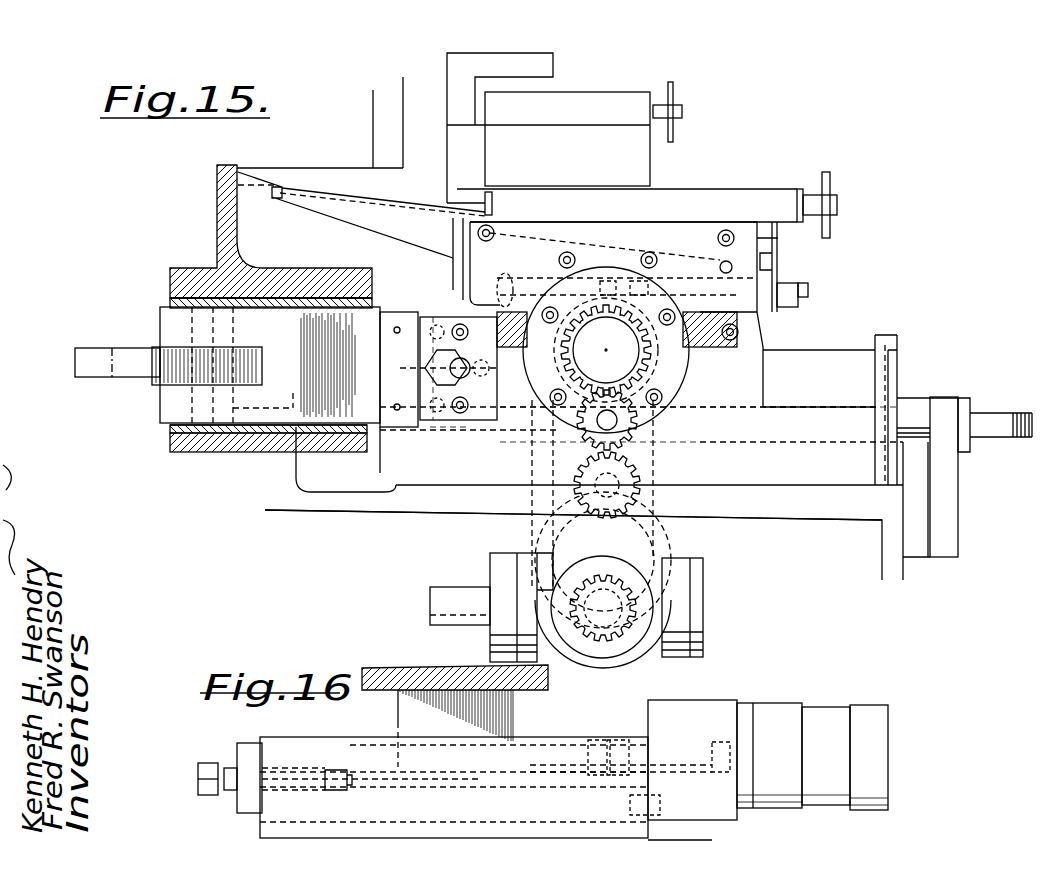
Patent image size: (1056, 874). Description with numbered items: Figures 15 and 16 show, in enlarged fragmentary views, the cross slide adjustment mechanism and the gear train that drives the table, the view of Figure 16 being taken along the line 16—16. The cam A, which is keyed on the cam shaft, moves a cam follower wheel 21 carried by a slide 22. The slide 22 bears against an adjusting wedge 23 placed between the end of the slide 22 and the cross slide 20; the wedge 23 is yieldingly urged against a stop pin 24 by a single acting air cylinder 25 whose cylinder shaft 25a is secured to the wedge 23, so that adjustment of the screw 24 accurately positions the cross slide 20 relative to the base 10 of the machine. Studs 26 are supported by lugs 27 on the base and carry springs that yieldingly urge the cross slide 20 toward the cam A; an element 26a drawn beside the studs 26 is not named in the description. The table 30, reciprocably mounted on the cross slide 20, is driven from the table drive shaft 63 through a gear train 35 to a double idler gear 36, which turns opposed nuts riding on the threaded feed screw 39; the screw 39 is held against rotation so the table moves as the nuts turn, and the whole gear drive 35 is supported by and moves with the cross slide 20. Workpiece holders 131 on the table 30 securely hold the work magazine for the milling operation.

In FIG. 15, the base 10 is at (895, 572).
In FIG. 15, the bearing sleeve 16 is at (319, 290).
In FIG. 15, the cross slide 20 is at (813, 356).
In FIG. 15, the cam follower wheel 21 is at (178, 380).
In FIG. 15, the slide 22 is at (293, 393).
In FIG. 16, the slide 22 is at (410, 712).
In FIG. 15, the adjusting wedge 23 is at (433, 317).
In FIG. 16, the adjusting wedge 23 is at (480, 770).
In FIG. 15, the stop pin 24 is at (400, 370).
In FIG. 16, the stop pin 24 is at (200, 767).
In FIG. 15, the single acting air cylinder 25 is at (457, 307).
In FIG. 16, the single acting air cylinder 25 is at (823, 718).
In FIG. 15, the cylinder shaft 25a is at (445, 430).
In FIG. 16, the cylinder shaft 25a is at (594, 724).
In FIG. 15, the studs 26 is at (903, 415).
In FIG. 15, the sleeve 26a is at (743, 437).
In FIG. 15, the lugs 27 is at (948, 503).
In FIG. 15, the table 30 is at (702, 200).
In FIG. 15, the gear train 35 is at (705, 560).
In FIG. 15, the double idler gear 36 is at (660, 484).
In FIG. 15, the threaded feed screw 39 is at (660, 370).
In FIG. 15, the table drive shaft 63 is at (453, 595).
In FIG. 15, the workpiece holders 131 is at (616, 91).
In FIG. 15, the cam A is at (133, 350).